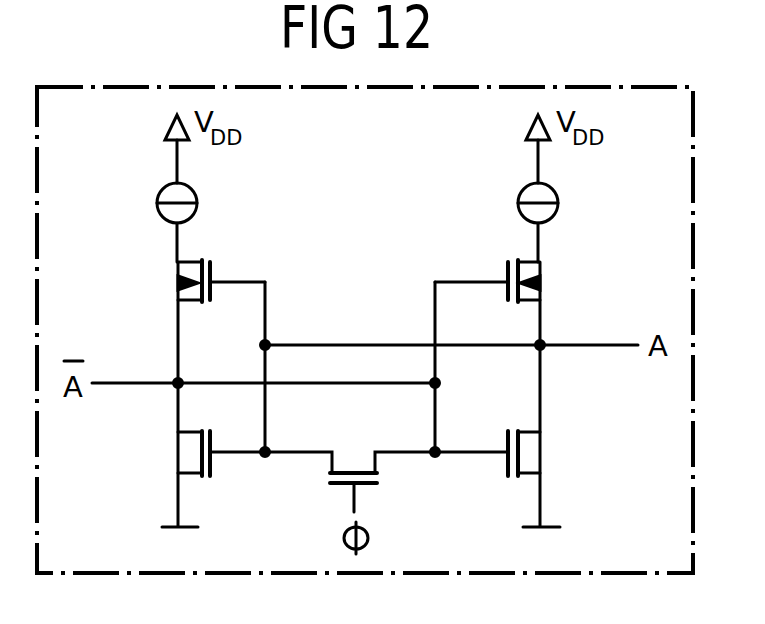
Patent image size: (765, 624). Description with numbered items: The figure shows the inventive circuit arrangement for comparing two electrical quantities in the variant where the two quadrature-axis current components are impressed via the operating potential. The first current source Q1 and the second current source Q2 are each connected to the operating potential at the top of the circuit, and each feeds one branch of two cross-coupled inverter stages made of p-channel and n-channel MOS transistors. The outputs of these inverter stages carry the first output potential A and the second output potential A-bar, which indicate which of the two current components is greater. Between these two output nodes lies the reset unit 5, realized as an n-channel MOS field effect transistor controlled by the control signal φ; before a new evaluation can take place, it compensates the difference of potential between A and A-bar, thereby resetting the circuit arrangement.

The first current source Q1 is at (157, 203).
The second current source Q2 is at (518, 203).
The reset unit 5 is at (330, 482).